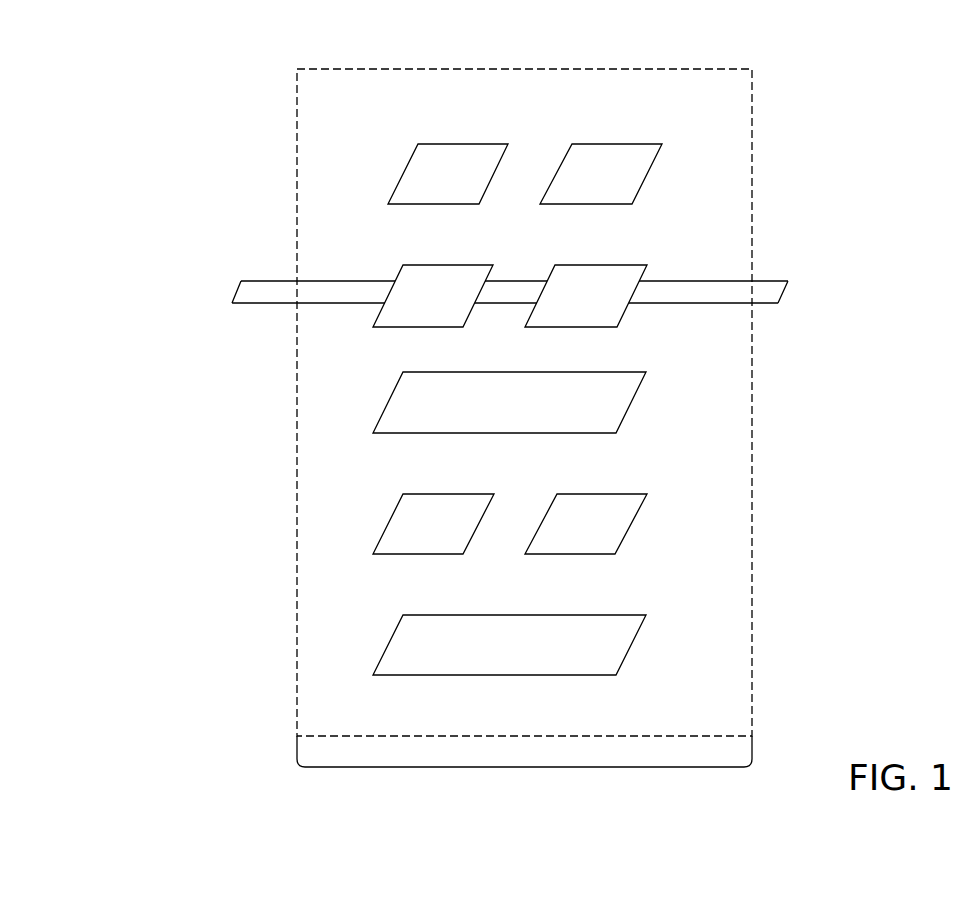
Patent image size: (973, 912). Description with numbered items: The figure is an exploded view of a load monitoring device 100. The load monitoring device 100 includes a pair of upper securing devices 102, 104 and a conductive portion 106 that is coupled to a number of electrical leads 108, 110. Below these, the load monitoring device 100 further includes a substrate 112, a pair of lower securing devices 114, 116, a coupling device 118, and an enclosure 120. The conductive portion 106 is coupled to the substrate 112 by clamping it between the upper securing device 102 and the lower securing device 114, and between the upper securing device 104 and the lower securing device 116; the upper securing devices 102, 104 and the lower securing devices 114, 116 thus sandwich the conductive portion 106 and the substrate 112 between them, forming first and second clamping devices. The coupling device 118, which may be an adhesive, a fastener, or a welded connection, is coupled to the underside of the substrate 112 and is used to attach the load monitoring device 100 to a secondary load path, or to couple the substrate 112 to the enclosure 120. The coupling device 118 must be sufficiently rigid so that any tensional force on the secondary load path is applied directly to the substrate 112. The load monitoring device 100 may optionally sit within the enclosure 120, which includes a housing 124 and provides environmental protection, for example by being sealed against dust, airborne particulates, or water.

The load monitoring device 100 is at (236, 203).
The upper securing device 102 is at (434, 160).
The upper securing device 104 is at (578, 160).
The conductive portion 106 is at (479, 273).
The electrical lead 108 is at (252, 289).
The electrical lead 110 is at (766, 288).
The substrate 112 is at (608, 409).
The lower securing device 114 is at (395, 540).
The lower securing device 116 is at (556, 538).
The coupling device 118 is at (608, 652).
The enclosure 120 is at (729, 83).
The housing 124 is at (328, 65).